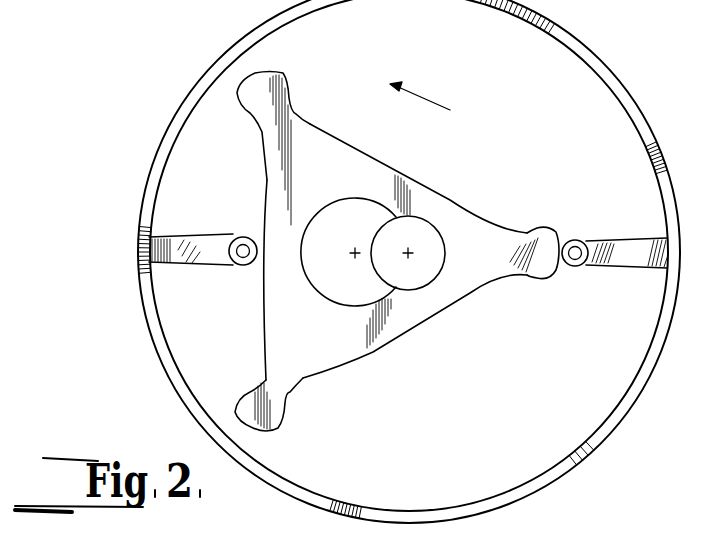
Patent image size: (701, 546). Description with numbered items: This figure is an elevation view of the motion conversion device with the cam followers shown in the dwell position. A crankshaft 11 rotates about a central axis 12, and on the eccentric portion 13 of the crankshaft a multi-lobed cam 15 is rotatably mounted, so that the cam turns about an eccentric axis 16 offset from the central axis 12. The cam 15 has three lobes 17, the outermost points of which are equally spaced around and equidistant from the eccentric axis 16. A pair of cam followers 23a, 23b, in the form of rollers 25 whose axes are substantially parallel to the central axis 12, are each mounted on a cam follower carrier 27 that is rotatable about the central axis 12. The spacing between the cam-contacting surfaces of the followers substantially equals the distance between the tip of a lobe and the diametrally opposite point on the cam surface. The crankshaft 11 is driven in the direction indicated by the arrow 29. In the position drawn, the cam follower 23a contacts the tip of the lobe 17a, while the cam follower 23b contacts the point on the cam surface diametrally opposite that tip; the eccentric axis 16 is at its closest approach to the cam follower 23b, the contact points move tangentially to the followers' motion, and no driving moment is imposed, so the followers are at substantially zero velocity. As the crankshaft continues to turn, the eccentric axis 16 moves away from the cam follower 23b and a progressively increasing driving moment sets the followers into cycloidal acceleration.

The crankshaft 11 is at (428, 277).
The central axis 12 is at (410, 250).
The eccentric portion 13 is at (383, 297).
The multi-lobed cam 15 is at (323, 127).
The eccentric axis 16 is at (353, 260).
The lobes 17 is at (272, 70).
The lobe 17a is at (553, 281).
The cam follower 23a is at (576, 238).
The cam follower 23b is at (235, 234).
The rollers 25 is at (238, 264).
The cam follower carrier 27 is at (580, 43).
The arrow 29 is at (436, 98).